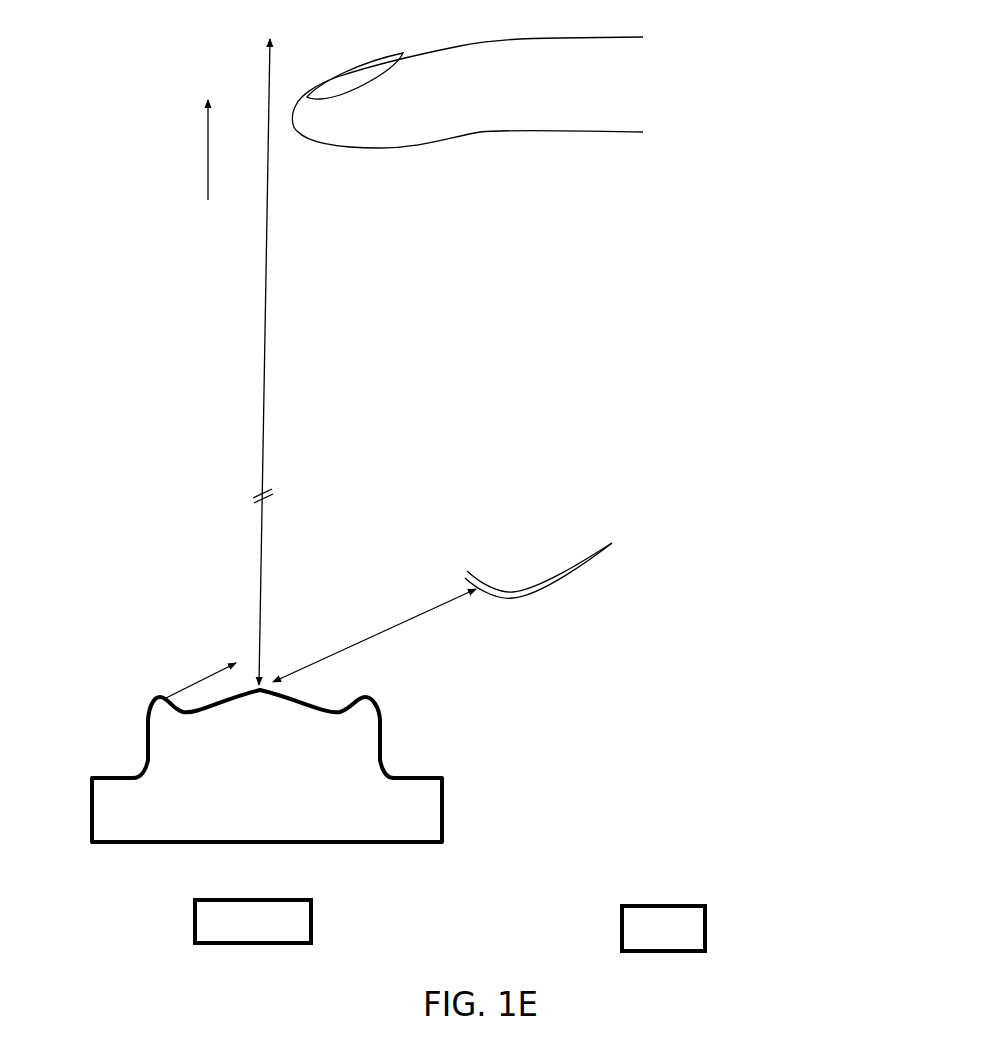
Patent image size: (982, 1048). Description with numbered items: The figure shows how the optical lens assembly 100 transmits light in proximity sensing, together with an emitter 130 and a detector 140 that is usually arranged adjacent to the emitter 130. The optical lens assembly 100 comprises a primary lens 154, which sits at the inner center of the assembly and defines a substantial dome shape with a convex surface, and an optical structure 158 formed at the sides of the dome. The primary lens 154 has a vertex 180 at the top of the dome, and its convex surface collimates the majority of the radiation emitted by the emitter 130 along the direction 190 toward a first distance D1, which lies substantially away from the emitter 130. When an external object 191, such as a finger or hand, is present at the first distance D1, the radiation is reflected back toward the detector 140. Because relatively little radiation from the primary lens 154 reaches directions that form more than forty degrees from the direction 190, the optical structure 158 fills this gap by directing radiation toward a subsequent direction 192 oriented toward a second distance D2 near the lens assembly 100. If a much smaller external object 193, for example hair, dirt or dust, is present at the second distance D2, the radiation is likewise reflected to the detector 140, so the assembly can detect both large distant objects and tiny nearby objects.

The optical lens assembly 100 is at (170, 574).
The emitter 130 is at (273, 930).
The detector 140 is at (683, 938).
The primary lens 154 is at (275, 783).
The optical structure 158 is at (157, 721).
The vertex 180 is at (260, 692).
The direction 190 is at (207, 162).
The external object 191 is at (418, 113).
The subsequent direction 192 is at (198, 677).
The external object 193 is at (537, 583).
The first distance D1 is at (263, 575).
The second distance D2 is at (427, 608).